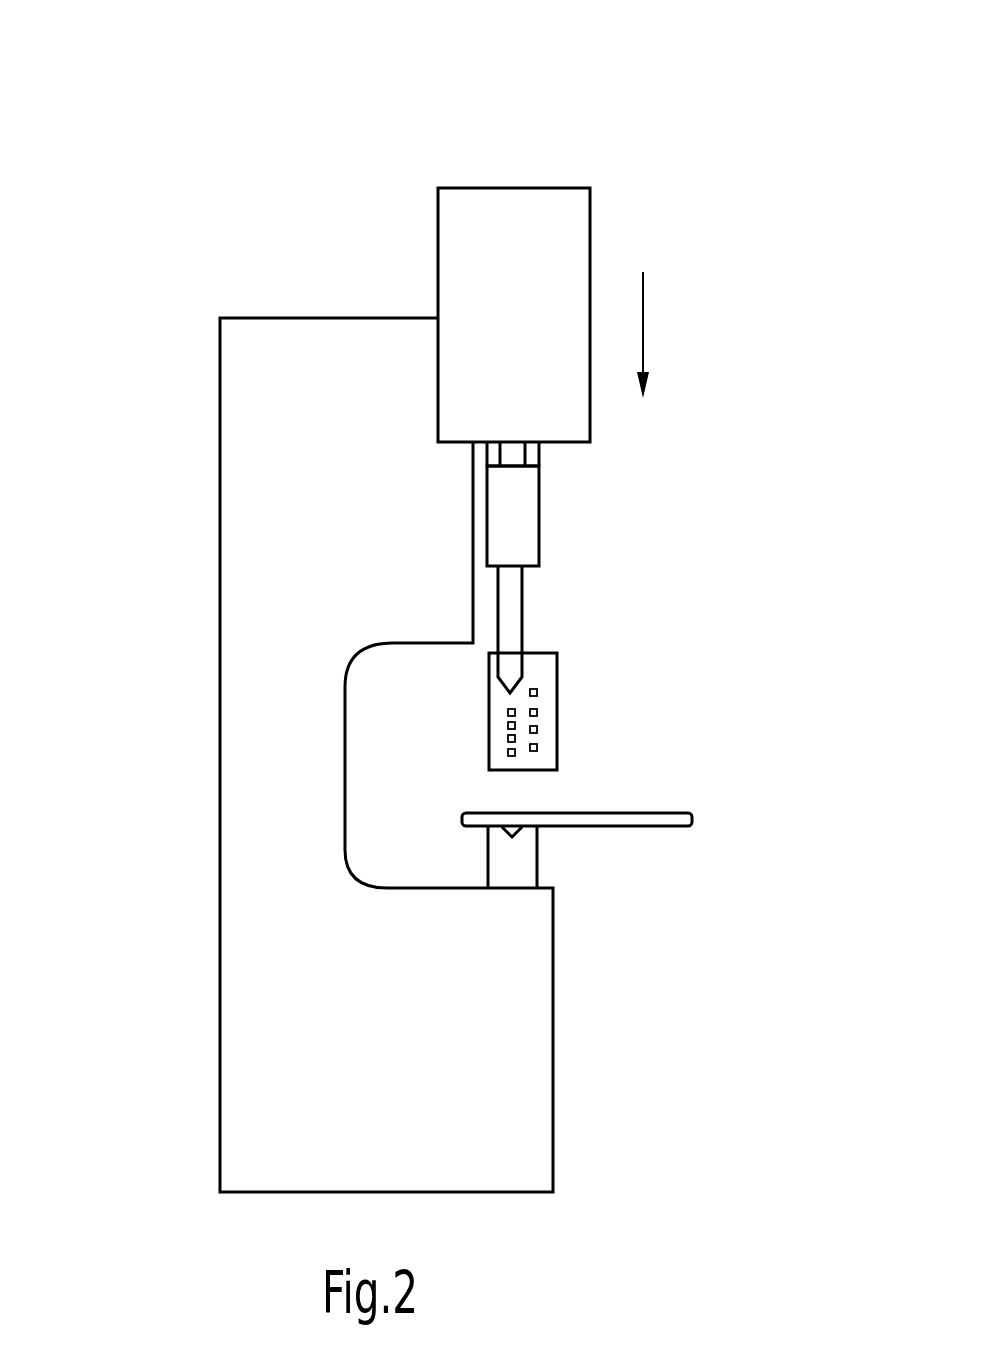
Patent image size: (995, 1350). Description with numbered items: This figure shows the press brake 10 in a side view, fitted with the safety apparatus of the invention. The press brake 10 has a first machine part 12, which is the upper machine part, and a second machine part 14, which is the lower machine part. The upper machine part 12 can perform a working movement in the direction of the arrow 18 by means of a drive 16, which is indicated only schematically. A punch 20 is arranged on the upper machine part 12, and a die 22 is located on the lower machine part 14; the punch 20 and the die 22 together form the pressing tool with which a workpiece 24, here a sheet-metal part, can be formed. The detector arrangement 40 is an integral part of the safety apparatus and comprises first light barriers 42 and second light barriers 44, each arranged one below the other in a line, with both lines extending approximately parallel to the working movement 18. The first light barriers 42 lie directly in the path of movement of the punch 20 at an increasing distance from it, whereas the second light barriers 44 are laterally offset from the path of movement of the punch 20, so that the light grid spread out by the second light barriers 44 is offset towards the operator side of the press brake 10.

The press brake 10 is at (190, 215).
The first machine part 12 is at (520, 498).
The second machine part 14 is at (517, 1117).
The drive 16 is at (527, 213).
The arrow 18 is at (645, 315).
The punch 20 is at (515, 608).
The die 22 is at (532, 869).
The workpiece 24 is at (688, 827).
The detector arrangement 40 is at (560, 677).
The first light barriers 42 is at (492, 740).
The second light barriers 44 is at (558, 728).